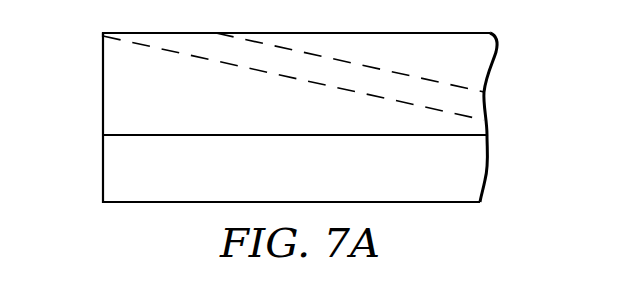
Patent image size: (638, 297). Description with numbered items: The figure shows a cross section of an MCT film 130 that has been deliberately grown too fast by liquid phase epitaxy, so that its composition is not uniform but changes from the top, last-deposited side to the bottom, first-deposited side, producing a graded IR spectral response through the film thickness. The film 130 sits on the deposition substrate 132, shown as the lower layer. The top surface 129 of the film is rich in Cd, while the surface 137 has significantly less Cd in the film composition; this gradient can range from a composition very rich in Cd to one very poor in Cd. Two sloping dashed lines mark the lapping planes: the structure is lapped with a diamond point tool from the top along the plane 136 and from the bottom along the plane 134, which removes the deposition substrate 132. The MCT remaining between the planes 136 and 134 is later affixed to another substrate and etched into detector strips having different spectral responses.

The top surface 129 is at (103, 33).
The MCT film 130 is at (164, 112).
The deposition substrate 132 is at (161, 181).
The plane 134 is at (322, 89).
The plane 136 is at (413, 74).
The surface 137 is at (488, 125).